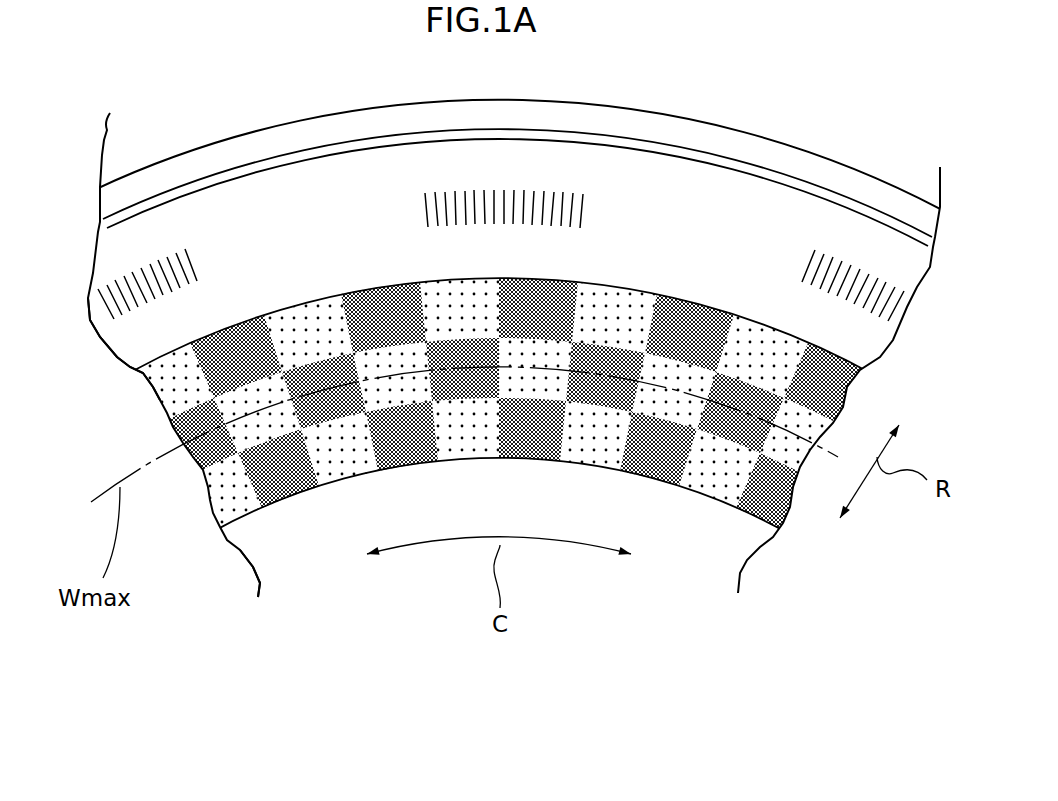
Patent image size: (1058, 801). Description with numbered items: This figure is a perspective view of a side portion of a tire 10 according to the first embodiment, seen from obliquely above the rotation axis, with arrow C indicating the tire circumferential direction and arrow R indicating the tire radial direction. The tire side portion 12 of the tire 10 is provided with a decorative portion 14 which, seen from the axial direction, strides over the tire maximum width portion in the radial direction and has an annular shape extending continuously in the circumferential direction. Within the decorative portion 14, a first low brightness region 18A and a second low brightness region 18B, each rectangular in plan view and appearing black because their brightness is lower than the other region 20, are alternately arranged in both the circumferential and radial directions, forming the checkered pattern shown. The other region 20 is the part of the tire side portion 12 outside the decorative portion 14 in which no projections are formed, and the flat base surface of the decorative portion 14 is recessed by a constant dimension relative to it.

The tire 10 is at (102, 155).
The tire side portion 12 is at (150, 392).
The decorative portion 14 is at (350, 287).
The first low brightness region 18A is at (545, 298).
The second low brightness region 18B is at (455, 300).
The other region 20 is at (143, 348).